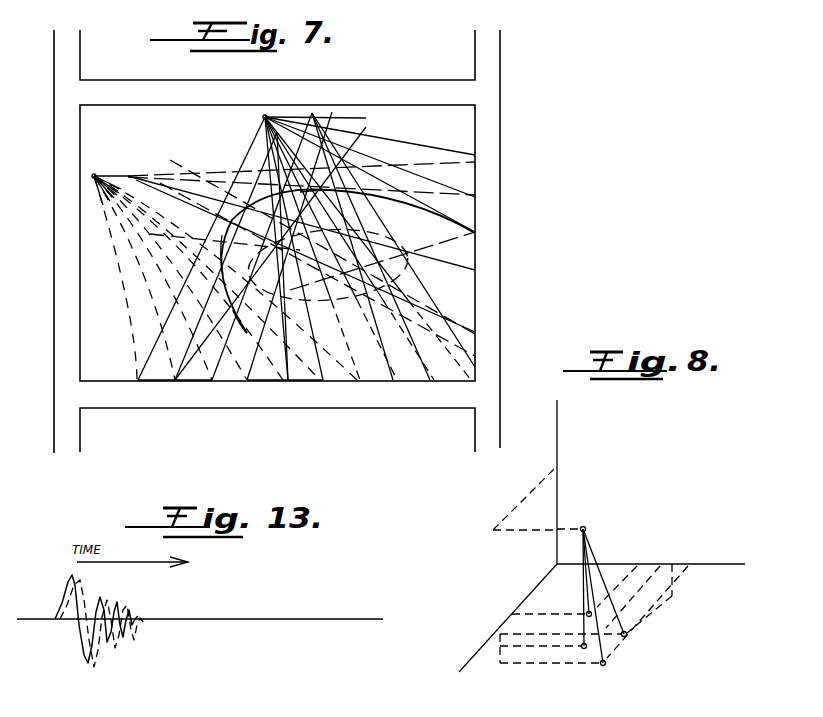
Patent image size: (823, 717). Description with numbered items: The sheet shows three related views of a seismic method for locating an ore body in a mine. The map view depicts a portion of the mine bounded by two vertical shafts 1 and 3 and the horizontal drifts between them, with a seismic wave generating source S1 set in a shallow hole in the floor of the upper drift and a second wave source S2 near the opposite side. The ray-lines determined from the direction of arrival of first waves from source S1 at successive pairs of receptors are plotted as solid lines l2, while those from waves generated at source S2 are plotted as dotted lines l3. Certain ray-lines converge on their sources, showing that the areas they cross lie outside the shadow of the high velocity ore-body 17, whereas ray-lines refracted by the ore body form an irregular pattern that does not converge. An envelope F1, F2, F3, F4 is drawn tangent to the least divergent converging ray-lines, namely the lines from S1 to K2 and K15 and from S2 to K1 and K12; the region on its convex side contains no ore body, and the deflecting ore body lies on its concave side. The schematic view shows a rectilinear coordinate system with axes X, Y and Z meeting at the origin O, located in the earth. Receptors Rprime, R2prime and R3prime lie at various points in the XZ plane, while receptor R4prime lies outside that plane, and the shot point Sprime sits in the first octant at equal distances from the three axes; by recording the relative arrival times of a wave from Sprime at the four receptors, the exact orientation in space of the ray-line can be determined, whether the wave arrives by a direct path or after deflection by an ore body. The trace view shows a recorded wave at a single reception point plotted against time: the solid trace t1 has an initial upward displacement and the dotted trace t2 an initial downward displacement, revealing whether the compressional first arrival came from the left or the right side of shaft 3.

In FIG. 7, the vertical shaft 1 is at (68, 54).
In FIG. 7, the vertical shaft 3 is at (490, 46).
In FIG. 7, the seismic wave generating source S1 is at (263, 117).
In FIG. 7, the wave source S2 is at (107, 177).
In FIG. 7, the ray-line end point K1 is at (475, 196).
In FIG. 7, the ray-line end point K2 is at (475, 232).
In FIG. 7, the ray-line end point K12 is at (290, 382).
In FIG. 7, the ray-line end point K15 is at (176, 382).
In FIG. 7, the envelope point F1 is at (348, 261).
In FIG. 7, the envelope point F2 is at (315, 203).
In FIG. 7, the envelope point F3 is at (226, 255).
In FIG. 7, the envelope point F4 is at (245, 321).
In FIG. 7, the high velocity ore-body 17 is at (372, 242).
In FIG. 7, the ray-lines from source S1 l2 is at (280, 248).
In FIG. 7, the ray-lines from source S2 l3 is at (107, 215).
In FIG. 8, the shot point Sprime is at (583, 527).
In FIG. 8, the receptor Rprime is at (586, 612).
In FIG. 8, the receptor R2prime is at (584, 649).
In FIG. 8, the receptor R3prime is at (627, 634).
In FIG. 8, the receptor R4prime is at (606, 666).
In FIG. 8, the X axis X is at (659, 564).
In FIG. 8, the Y axis Y is at (556, 472).
In FIG. 8, the Z axis Z is at (503, 625).
In FIG. 8, the origin O is at (547, 558).
In FIG. 13, the recorded trace with upward initial displacement t1 is at (65, 597).
In FIG. 13, the recorded trace with downward initial displacement t2 is at (68, 652).